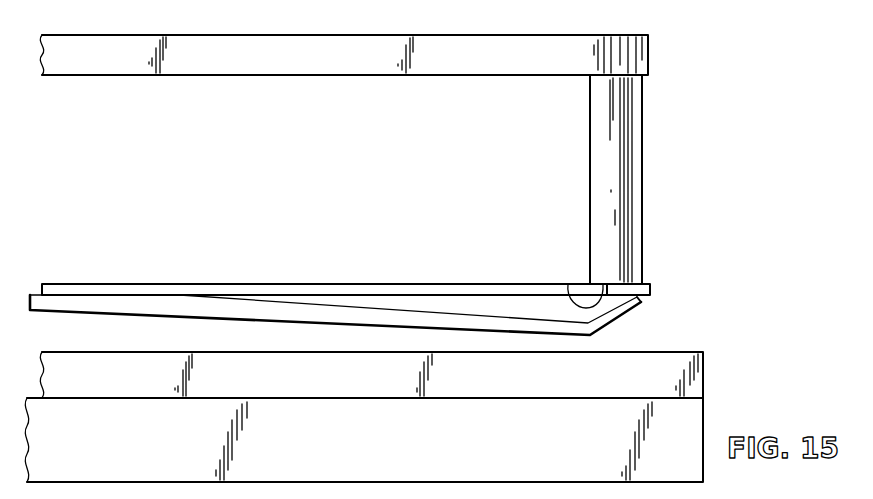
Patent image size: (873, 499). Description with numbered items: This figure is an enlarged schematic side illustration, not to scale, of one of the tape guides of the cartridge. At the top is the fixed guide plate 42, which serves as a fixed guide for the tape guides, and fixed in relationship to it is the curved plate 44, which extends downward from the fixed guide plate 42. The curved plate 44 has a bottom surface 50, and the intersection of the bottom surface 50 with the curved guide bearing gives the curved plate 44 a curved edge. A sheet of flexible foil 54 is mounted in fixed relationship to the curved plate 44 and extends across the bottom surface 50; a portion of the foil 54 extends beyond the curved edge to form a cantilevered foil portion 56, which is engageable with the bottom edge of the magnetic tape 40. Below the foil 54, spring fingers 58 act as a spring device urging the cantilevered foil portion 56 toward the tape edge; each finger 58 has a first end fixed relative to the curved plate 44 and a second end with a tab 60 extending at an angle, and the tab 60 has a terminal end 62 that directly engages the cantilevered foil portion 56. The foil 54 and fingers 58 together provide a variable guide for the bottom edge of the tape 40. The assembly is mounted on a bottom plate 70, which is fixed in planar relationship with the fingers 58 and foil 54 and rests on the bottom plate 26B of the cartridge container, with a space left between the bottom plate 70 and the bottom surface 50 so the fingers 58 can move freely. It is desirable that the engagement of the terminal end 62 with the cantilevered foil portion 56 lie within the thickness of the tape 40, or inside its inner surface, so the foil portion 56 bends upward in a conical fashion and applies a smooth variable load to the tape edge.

The fixed guide plate 42 is at (268, 75).
The magnetic tape 40 is at (643, 173).
The curved plate 44 is at (590, 160).
The sheet of flexible foil 54 is at (270, 284).
The cantilevered foil portion 56 is at (650, 289).
The bottom surface 50 is at (567, 285).
The spring fingers 58 is at (477, 313).
The tab 60 is at (613, 326).
The terminal end 62 is at (645, 300).
The bottom plate 70 is at (374, 385).
The bottom plate of the cartridge container 26B is at (378, 448).